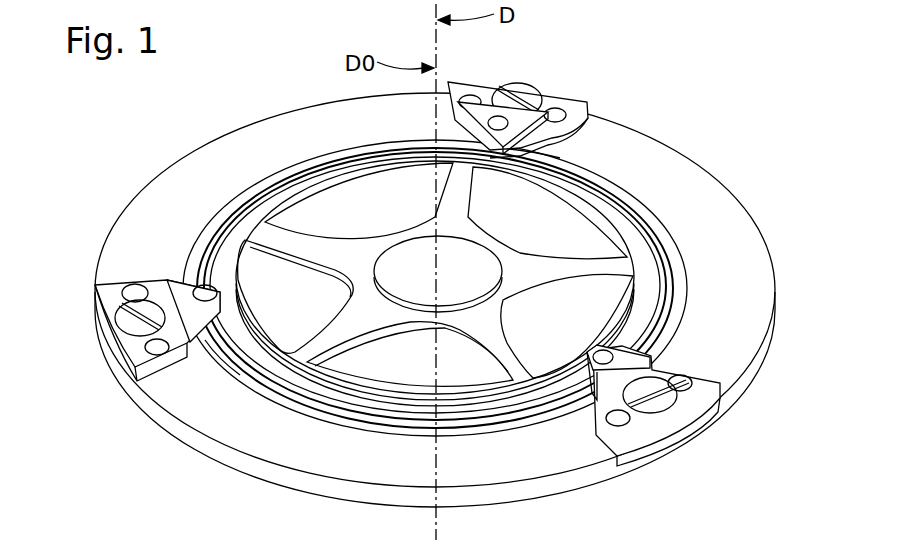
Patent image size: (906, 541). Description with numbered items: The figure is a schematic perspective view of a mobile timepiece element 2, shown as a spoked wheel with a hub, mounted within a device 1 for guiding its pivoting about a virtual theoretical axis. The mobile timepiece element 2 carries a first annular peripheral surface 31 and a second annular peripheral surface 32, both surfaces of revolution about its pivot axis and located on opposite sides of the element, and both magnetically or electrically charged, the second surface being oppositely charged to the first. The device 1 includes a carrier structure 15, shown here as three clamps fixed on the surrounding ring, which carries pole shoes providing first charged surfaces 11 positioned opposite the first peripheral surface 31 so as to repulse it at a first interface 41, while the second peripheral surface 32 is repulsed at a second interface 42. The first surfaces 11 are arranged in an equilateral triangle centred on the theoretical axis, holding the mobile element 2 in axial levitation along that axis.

The device for guiding pivoting 1 is at (674, 360).
The mobile timepiece element 2 is at (297, 233).
The first charged surfaces 11 is at (498, 153).
The carrier structure 15 is at (572, 103).
The first annular peripheral surface 31 is at (204, 230).
The second annular peripheral surface 32 is at (265, 396).
The first interface 41 is at (525, 147).
The second interface 42 is at (208, 350).